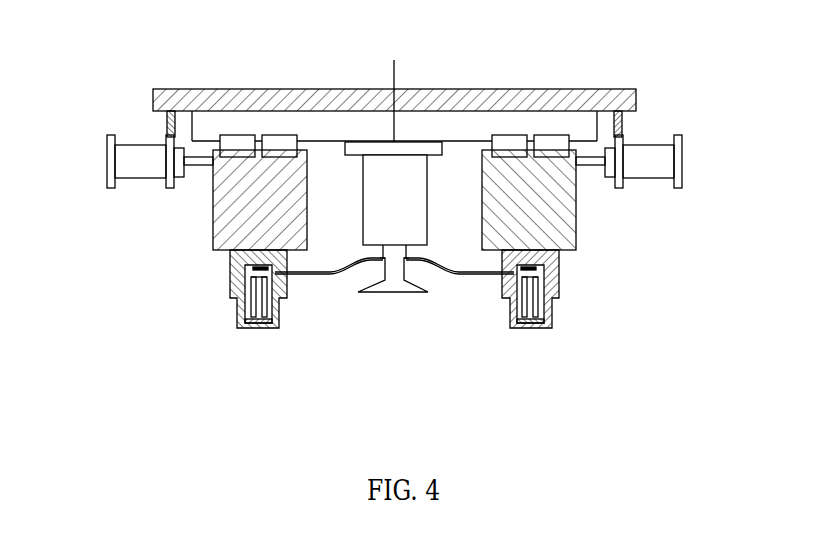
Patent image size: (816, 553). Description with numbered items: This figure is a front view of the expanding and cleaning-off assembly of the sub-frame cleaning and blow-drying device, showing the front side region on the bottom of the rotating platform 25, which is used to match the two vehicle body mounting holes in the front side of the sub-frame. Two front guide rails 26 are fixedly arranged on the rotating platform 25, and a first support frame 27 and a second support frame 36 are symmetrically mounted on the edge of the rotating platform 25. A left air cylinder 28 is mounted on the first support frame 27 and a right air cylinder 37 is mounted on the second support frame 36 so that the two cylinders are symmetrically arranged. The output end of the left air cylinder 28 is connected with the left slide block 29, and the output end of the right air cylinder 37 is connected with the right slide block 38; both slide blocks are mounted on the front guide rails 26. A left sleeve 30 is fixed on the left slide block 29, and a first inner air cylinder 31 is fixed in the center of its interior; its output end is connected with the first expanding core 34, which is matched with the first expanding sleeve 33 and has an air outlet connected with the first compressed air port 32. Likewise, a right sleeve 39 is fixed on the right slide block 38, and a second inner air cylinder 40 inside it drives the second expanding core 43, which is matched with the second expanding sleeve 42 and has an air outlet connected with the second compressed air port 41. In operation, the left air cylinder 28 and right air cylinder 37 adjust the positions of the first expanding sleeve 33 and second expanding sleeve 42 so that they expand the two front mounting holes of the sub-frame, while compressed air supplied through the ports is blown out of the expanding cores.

The rotating platform 25 is at (207, 96).
The front guide rails 26 is at (218, 122).
The first support frame 27 is at (175, 130).
The left air cylinder 28 is at (158, 155).
The left slide block 29 is at (222, 228).
The left sleeve 30 is at (237, 258).
The first inner air cylinder 31 is at (238, 275).
The first compressed air port 32 is at (239, 292).
The first expanding sleeve 33 is at (242, 313).
The first expanding core 34 is at (240, 323).
The second support frame 36 is at (620, 127).
The right air cylinder 37 is at (630, 155).
The right slide block 38 is at (568, 228).
The right sleeve 39 is at (556, 256).
The second inner air cylinder 40 is at (553, 272).
The second compressed air port 41 is at (552, 291).
The second expanding sleeve 42 is at (549, 312).
The second expanding core 43 is at (550, 324).